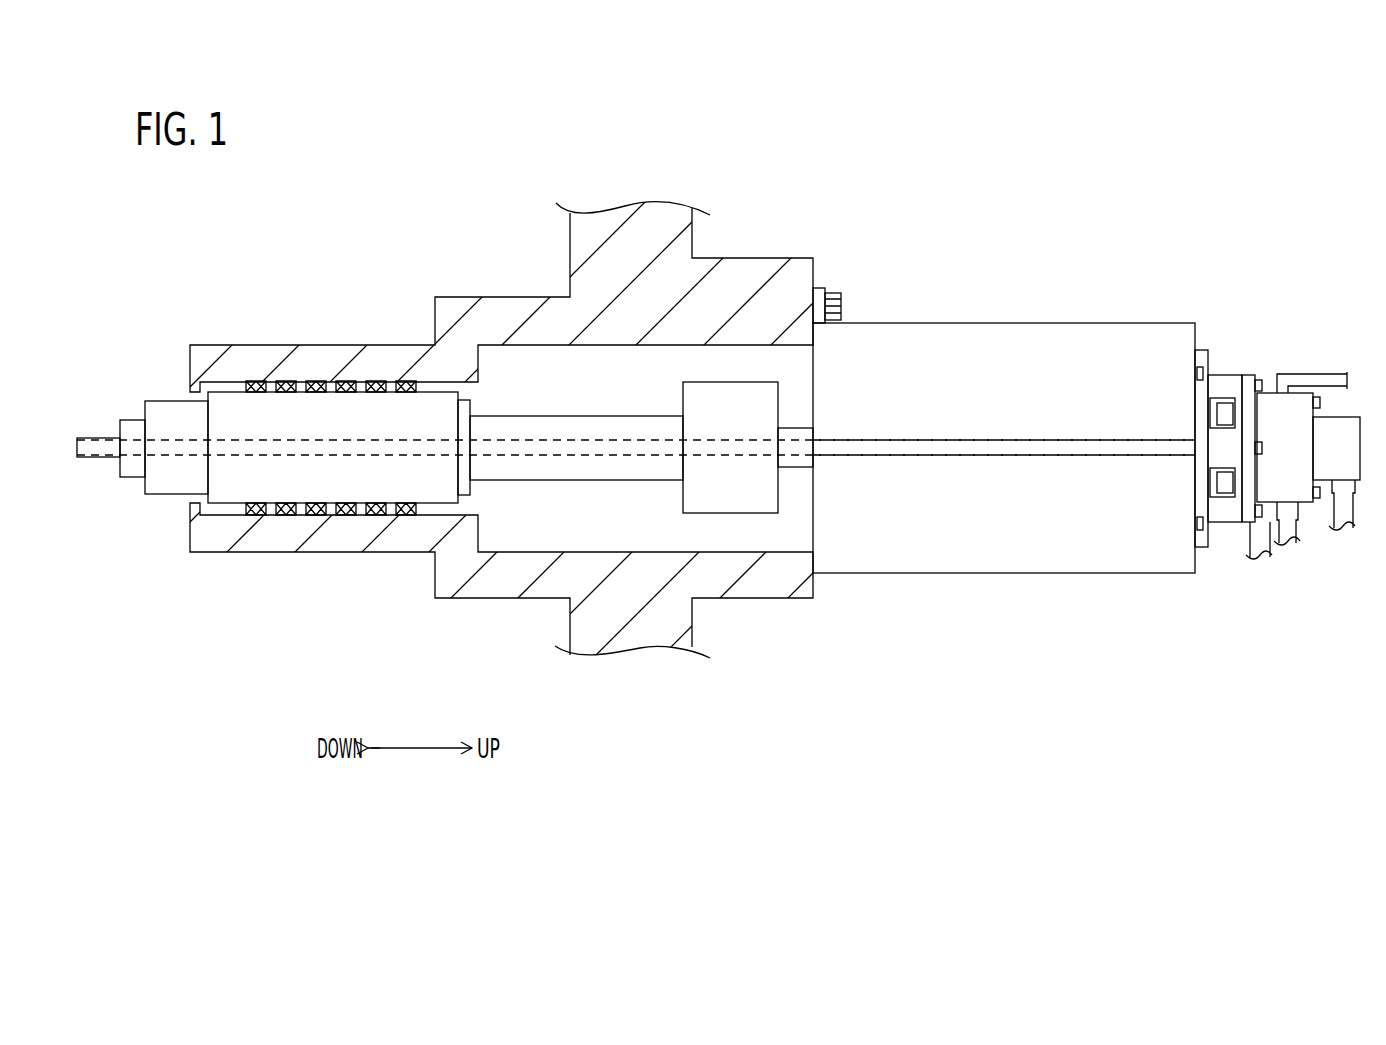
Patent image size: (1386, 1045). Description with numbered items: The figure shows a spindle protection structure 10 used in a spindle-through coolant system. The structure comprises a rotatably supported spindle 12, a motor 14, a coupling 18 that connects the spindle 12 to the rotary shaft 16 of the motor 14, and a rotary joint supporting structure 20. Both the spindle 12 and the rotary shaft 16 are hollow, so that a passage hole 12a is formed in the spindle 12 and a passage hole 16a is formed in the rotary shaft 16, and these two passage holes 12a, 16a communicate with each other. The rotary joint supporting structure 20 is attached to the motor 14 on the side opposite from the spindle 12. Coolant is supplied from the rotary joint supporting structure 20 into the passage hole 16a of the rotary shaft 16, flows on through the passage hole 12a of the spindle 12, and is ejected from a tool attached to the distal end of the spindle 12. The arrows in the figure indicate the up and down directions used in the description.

The spindle protection structure 10 is at (785, 153).
The spindle 12 is at (441, 391).
The passage hole 12a is at (290, 440).
The motor 14 is at (1007, 321).
The rotary shaft 16 is at (797, 426).
The passage hole 16a is at (896, 442).
The coupling 18 is at (681, 389).
The rotary joint supporting structure 20 is at (1272, 355).